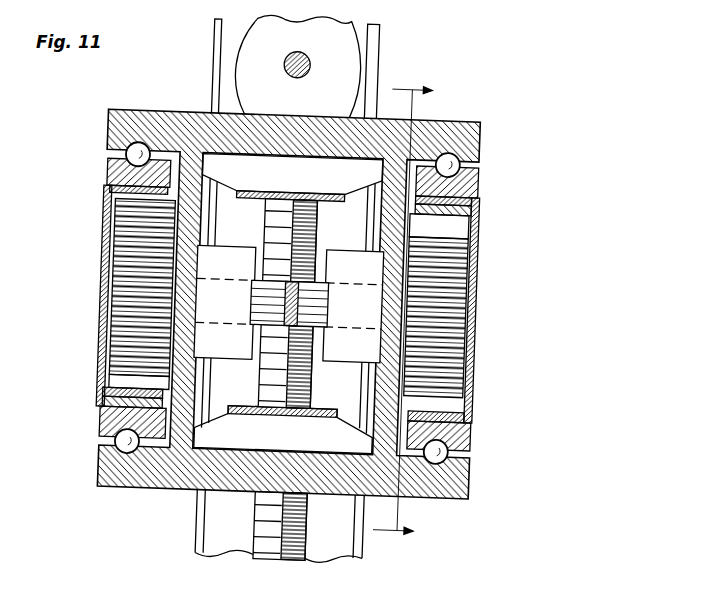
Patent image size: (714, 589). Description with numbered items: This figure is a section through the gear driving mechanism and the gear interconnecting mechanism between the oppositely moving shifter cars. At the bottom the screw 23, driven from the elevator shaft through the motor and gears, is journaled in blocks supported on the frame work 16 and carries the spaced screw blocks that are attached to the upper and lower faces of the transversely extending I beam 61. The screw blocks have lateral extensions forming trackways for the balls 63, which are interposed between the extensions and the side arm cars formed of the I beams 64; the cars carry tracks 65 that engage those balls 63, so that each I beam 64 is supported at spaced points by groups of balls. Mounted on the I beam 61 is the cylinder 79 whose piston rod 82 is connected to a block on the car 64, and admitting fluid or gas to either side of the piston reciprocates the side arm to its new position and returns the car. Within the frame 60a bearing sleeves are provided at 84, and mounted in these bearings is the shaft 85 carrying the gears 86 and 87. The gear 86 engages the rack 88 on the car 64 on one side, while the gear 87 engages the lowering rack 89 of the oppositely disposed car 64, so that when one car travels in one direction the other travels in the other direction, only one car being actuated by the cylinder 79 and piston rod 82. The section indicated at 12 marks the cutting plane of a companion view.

The cylinder 79 is at (237, 46).
The piston rod 82 is at (276, 64).
The frame 16 is at (369, 43).
The section line 12- 12 is at (402, 310).
The frame 60a is at (144, 127).
The balls 63 is at (123, 155).
The tracks 65 is at (114, 178).
The gear 87 is at (126, 242).
The I beam 64 is at (107, 313).
The lowering rack 89 is at (128, 387).
The rack 88 is at (452, 221).
The gear 86 is at (455, 263).
The bearing sleeve 84 is at (246, 260).
The shaft 85 is at (306, 298).
The I beam 61 is at (284, 412).
The screw 23 is at (286, 543).